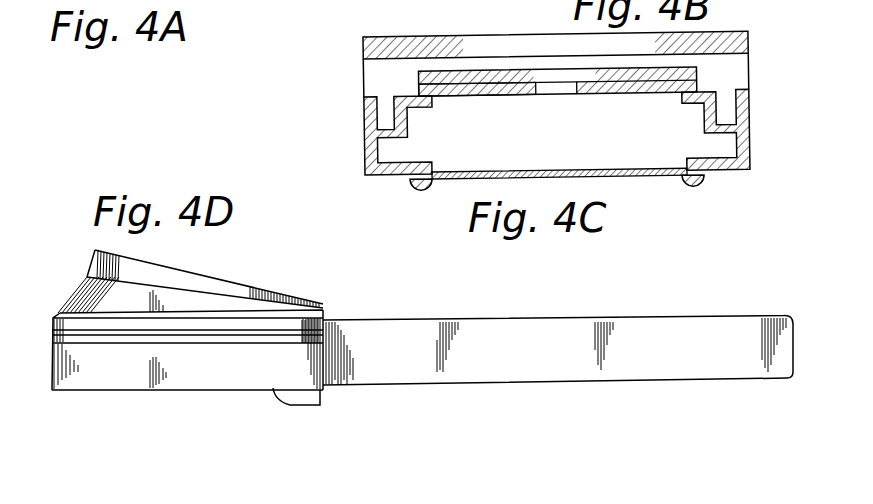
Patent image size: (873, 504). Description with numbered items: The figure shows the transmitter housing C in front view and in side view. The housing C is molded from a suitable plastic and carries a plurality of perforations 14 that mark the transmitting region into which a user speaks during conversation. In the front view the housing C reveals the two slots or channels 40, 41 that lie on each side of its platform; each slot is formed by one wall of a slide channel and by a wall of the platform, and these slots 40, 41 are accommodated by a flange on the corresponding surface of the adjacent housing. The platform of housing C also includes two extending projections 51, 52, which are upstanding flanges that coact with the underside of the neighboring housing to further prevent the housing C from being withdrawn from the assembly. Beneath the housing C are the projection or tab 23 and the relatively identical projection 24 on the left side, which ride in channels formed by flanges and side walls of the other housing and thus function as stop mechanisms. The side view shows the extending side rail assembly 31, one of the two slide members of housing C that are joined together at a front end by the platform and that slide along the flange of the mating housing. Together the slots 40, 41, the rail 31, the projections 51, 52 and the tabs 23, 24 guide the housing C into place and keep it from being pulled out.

In FIG. 4D, the perforations 14 is at (222, 280).
In FIG. 4C, the projection or tab 23 is at (697, 187).
In FIG. 4D, the projection or tab 23 is at (297, 395).
In FIG. 4C, the projection 24 is at (413, 194).
In FIG. 4D, the side rail assembly 31 is at (692, 321).
In FIG. 4C, the slot or channel 40 is at (390, 101).
In FIG. 4C, the slot or channel 41 is at (723, 103).
In FIG. 4C, the extending projection 51 is at (660, 75).
In FIG. 4D, the extending projection 51 is at (590, 318).
In FIG. 4C, the extending projection 52 is at (422, 80).
In FIG. 4C, the transmitter housing C is at (790, 149).
In FIG. 4D, the transmitter housing C is at (187, 373).